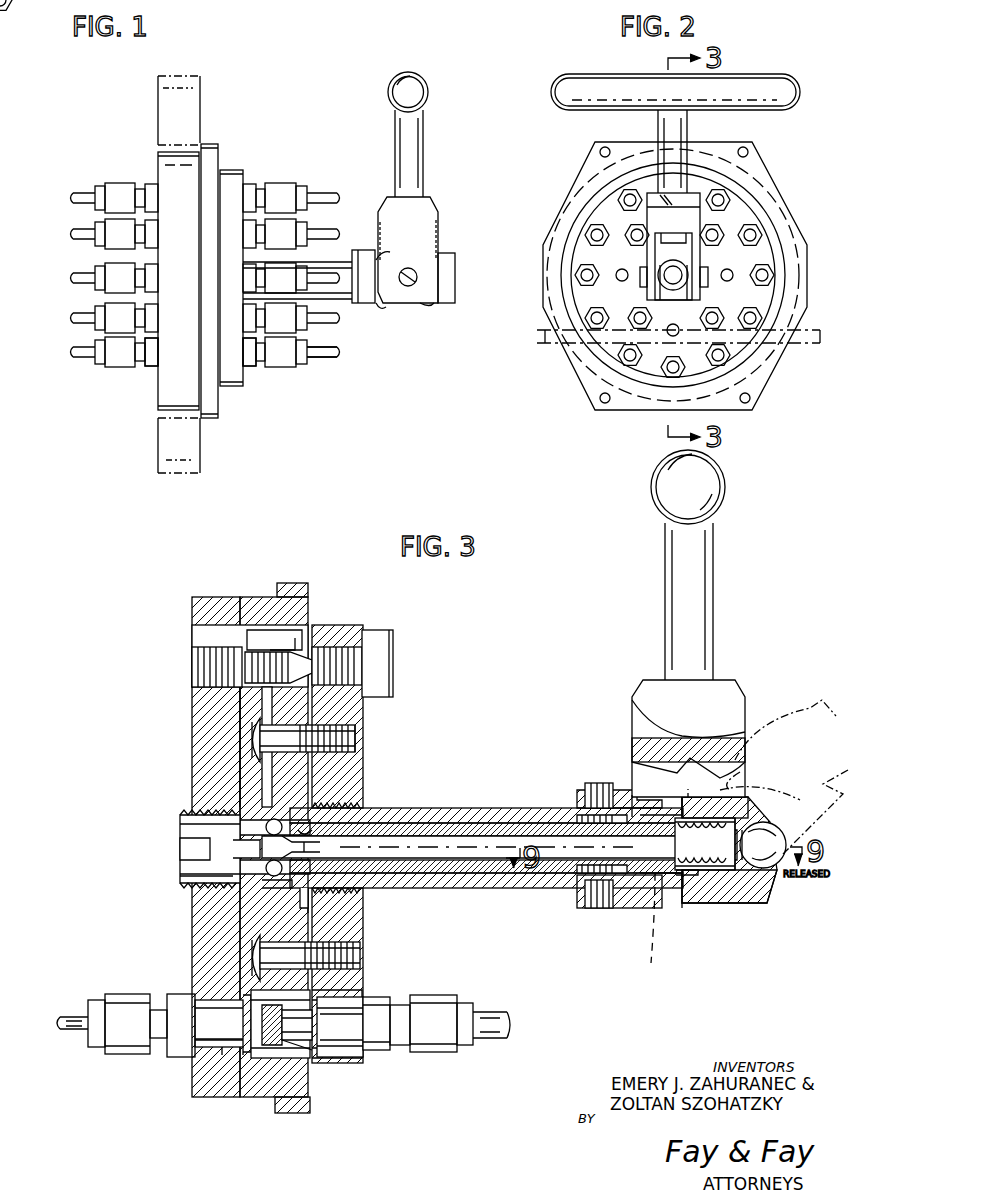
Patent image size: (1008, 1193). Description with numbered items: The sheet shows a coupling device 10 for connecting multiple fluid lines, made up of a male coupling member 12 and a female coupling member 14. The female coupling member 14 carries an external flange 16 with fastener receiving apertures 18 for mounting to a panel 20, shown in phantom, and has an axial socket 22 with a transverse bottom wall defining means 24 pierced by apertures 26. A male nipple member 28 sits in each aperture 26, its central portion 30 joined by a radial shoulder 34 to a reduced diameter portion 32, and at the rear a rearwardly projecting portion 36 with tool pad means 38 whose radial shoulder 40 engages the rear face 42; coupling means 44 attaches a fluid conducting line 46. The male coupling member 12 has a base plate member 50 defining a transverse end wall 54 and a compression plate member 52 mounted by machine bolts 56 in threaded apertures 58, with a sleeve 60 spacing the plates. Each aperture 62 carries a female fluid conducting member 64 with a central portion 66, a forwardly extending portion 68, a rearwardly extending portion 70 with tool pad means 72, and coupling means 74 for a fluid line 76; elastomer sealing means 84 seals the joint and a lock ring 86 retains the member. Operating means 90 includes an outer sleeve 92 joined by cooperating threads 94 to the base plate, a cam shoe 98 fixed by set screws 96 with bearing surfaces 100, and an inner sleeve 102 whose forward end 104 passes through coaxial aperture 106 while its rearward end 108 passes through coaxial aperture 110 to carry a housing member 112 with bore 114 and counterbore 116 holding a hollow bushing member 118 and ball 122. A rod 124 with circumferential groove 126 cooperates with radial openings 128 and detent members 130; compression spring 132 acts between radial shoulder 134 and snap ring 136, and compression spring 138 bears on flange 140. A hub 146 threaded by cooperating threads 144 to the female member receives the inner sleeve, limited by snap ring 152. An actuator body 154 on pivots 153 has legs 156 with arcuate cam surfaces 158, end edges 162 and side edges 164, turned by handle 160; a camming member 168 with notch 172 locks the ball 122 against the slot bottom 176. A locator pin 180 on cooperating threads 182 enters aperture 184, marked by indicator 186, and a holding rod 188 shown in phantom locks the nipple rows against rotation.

In FIG. 1, the coupling device 10 is at (268, 86).
In FIG. 2, the coupling device 10 is at (548, 152).
In FIG. 3, the coupling device 10 is at (440, 666).
In FIG. 1, the male coupling member 12 is at (222, 165).
In FIG. 2, the male coupling member 12 is at (772, 164).
In FIG. 3, the male coupling member 12 is at (350, 628).
In FIG. 1, the female coupling member 14 is at (156, 150).
In FIG. 3, the female coupling member 14 is at (190, 610).
In FIG. 1, the external flange 16 is at (218, 418).
In FIG. 2, the external flange 16 is at (768, 383).
In FIG. 3, the external flange 16 is at (292, 583).
In FIG. 2, the fastener receiving apertures 18 is at (748, 150).
In FIG. 1, the panel 20 is at (201, 82).
In FIG. 3, the socket 22 is at (266, 1068).
In FIG. 3, the transverse bottom wall defining means 24 is at (238, 780).
In FIG. 3, the apertures 26 is at (208, 1000).
In FIG. 1, the male nipple member 28 is at (147, 364).
In FIG. 3, the male nipple member 28 is at (181, 1061).
In FIG. 3, the central portion 30 is at (228, 1048).
In FIG. 3, the reduced diameter portion 32 is at (280, 1040).
In FIG. 3, the radial shoulder 34 is at (244, 992).
In FIG. 3, the rearwardly projecting portion 36 is at (160, 1040).
In FIG. 3, the tool pad means 38 is at (178, 1010).
In FIG. 3, the radial shoulder 40 is at (210, 1044).
In FIG. 3, the rear face 42 is at (192, 632).
In FIG. 3, the coupling means 44 is at (116, 1048).
In FIG. 1, the fluid conducting line 46 is at (80, 357).
In FIG. 3, the fluid conducting line 46 is at (75, 1016).
In FIG. 1, the base plate member 50 is at (240, 386).
In FIG. 3, the base plate member 50 is at (362, 766).
In FIG. 3, the compression plate member 52 is at (262, 630).
In FIG. 3, the transverse end wall 54 is at (300, 706).
In FIG. 2, the machine bolts 56 is at (730, 272).
In FIG. 3, the machine bolts 56 is at (358, 740).
In FIG. 3, the threaded apertures 58 is at (336, 950).
In FIG. 3, the sleeve 60 is at (244, 734).
In FIG. 3, the apertures 62 is at (346, 1046).
In FIG. 1, the female fluid conducting member 64 is at (254, 370).
In FIG. 2, the female fluid conducting member 64 is at (624, 358).
In FIG. 3, the female fluid conducting member 64 is at (368, 1000).
In FIG. 3, the central portion 66 is at (322, 1050).
In FIG. 3, the forwardly extending portion 68 is at (296, 1050).
In FIG. 3, the rearwardly extending portion 70 is at (400, 1046).
In FIG. 3, the tool pad means 72 is at (418, 998).
In FIG. 3, the coupling means 74 is at (466, 1044).
In FIG. 1, the fluid line 76 is at (340, 354).
In FIG. 3, the fluid line 76 is at (500, 1018).
In FIG. 3, the elastomer sealing means 84 is at (290, 1060).
In FIG. 3, the lock ring 86 is at (312, 1002).
In FIG. 1, the operating means 90 is at (420, 318).
In FIG. 2, the operating means 90 is at (608, 252).
In FIG. 3, the operating means 90 is at (732, 948).
In FIG. 1, the outer sleeve 92 is at (338, 302).
In FIG. 3, the outer sleeve 92 is at (450, 808).
In FIG. 3, the cooperating threads 94 is at (326, 900).
In FIG. 3, the set screws 96 is at (606, 908).
In FIG. 1, the cam shoe 98 is at (362, 250).
In FIG. 3, the cam shoe 98 is at (658, 918).
In FIG. 1, the bearing surfaces 100 is at (444, 306).
In FIG. 3, the bearing surfaces 100 is at (654, 933).
In FIG. 3, the inner sleeve 102 is at (488, 828).
In FIG. 3, the forward end 104 is at (180, 830).
In FIG. 3, the coaxial aperture 106 is at (272, 882).
In FIG. 3, the rearward end 108 is at (628, 810).
In FIG. 3, the coaxial aperture 110 is at (624, 896).
In FIG. 2, the housing member 112 is at (696, 284).
In FIG. 3, the housing member 112 is at (770, 890).
In FIG. 3, the bore 114 is at (444, 860).
In FIG. 3, the counterbore 116 is at (734, 932).
In FIG. 3, the hollow bushing member 118 is at (756, 908).
In FIG. 2, the ball 122 is at (672, 278).
In FIG. 3, the ball 122 is at (782, 860).
In FIG. 3, the rod 124 is at (494, 845).
In FIG. 3, the circumferential groove 126 is at (310, 830).
In FIG. 3, the radial openings 128 is at (254, 806).
In FIG. 3, the detent member 130 is at (280, 818).
In FIG. 3, the compression spring 132 is at (690, 882).
In FIG. 3, the radial shoulder 134 is at (690, 878).
In FIG. 3, the snap ring 136 is at (712, 888).
In FIG. 3, the compression spring 138 is at (588, 784).
In FIG. 3, the flange 140 is at (582, 892).
In FIG. 3, the cooperating threads 144 is at (200, 886).
In FIG. 3, the hub 146 is at (180, 856).
In FIG. 3, the snap ring 152 is at (312, 912).
In FIG. 1, the pivots 153 is at (418, 277).
In FIG. 2, the pivots 153 is at (668, 276).
In FIG. 3, the pivots 153 is at (688, 784).
In FIG. 1, the body 154 is at (434, 214).
In FIG. 2, the body 154 is at (700, 215).
In FIG. 3, the body 154 is at (732, 683).
In FIG. 3, the legs 156 is at (732, 774).
In FIG. 1, the arcuate cam surfaces 158 is at (380, 306).
In FIG. 1, the handle 160 is at (420, 76).
In FIG. 2, the handle 160 is at (748, 72).
In FIG. 3, the handle 160 is at (726, 488).
In FIG. 1, the end edges 162 is at (424, 306).
In FIG. 1, the side edges 164 is at (377, 259).
In FIG. 3, the camming member 168 is at (728, 758).
In FIG. 3, the notch 172 is at (646, 728).
In FIG. 3, the bottom 176 is at (778, 876).
In FIG. 3, the locator pin 180 is at (305, 670).
In FIG. 3, the cooperating threads 182 is at (194, 648).
In FIG. 3, the aperture 184 is at (292, 666).
In FIG. 3, the indicator 186 is at (380, 650).
In FIG. 2, the rod 188 is at (798, 343).